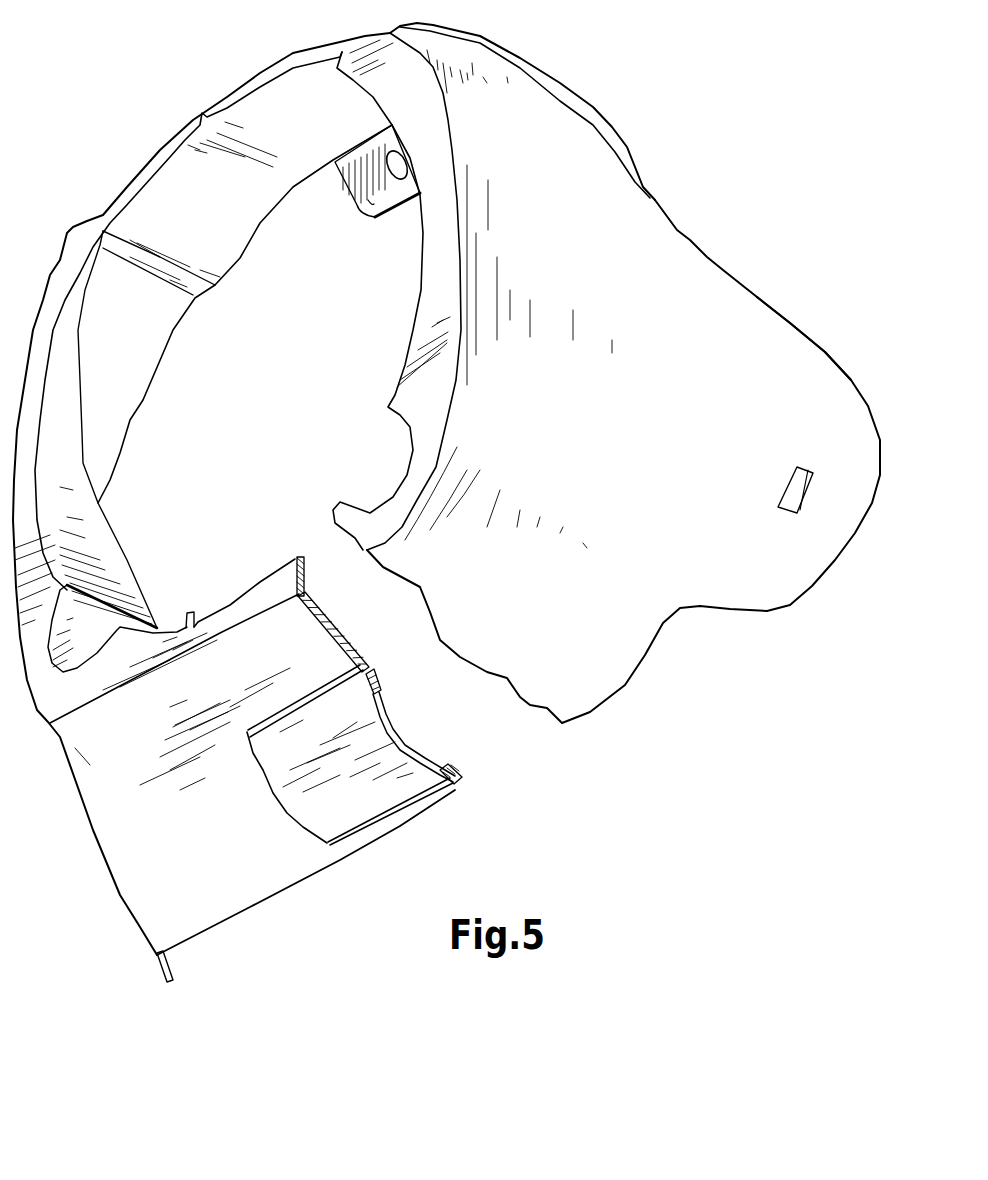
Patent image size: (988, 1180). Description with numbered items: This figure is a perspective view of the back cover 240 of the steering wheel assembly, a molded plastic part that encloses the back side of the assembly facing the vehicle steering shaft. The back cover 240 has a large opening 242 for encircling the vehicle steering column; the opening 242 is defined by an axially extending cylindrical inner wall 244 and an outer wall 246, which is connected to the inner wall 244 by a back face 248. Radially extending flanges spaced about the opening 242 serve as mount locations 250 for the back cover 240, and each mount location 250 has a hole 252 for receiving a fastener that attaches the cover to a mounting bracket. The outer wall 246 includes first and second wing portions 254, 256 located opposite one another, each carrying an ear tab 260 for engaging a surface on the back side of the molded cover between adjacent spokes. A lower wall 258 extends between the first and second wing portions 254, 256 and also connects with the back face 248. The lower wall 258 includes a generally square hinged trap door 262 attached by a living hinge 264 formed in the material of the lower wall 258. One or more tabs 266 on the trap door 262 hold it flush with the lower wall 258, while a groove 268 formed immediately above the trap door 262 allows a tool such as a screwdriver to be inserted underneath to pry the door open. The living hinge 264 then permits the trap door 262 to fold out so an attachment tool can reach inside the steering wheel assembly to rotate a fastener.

The back cover 240 is at (680, 227).
The opening 242 is at (279, 405).
The inner wall 244 is at (90, 560).
The outer wall 246 is at (573, 143).
The back face 248 is at (413, 100).
The mount location 250 is at (360, 213).
The hole 252 is at (387, 163).
The first wing portion 254 is at (810, 380).
The second wing portion 256 is at (167, 980).
The lower wall 258 is at (267, 870).
The ear tab 260 is at (793, 512).
The trap door 262 is at (353, 800).
The living hinge 264 is at (427, 783).
The tab 266 is at (380, 683).
The groove 268 is at (310, 690).